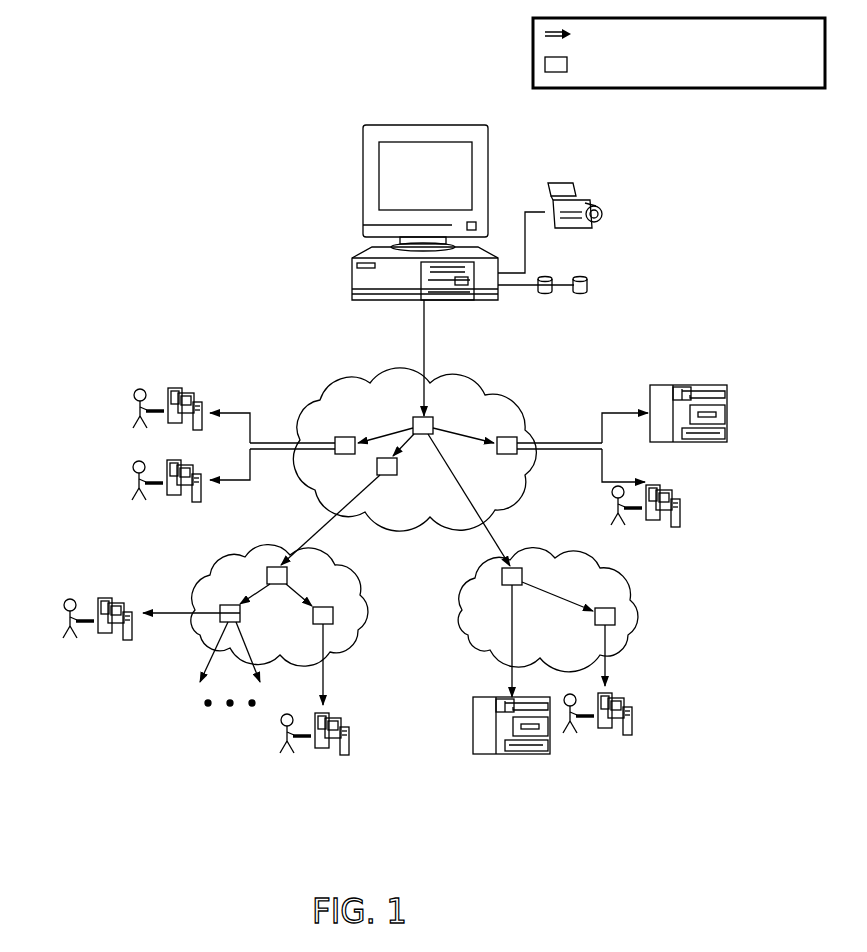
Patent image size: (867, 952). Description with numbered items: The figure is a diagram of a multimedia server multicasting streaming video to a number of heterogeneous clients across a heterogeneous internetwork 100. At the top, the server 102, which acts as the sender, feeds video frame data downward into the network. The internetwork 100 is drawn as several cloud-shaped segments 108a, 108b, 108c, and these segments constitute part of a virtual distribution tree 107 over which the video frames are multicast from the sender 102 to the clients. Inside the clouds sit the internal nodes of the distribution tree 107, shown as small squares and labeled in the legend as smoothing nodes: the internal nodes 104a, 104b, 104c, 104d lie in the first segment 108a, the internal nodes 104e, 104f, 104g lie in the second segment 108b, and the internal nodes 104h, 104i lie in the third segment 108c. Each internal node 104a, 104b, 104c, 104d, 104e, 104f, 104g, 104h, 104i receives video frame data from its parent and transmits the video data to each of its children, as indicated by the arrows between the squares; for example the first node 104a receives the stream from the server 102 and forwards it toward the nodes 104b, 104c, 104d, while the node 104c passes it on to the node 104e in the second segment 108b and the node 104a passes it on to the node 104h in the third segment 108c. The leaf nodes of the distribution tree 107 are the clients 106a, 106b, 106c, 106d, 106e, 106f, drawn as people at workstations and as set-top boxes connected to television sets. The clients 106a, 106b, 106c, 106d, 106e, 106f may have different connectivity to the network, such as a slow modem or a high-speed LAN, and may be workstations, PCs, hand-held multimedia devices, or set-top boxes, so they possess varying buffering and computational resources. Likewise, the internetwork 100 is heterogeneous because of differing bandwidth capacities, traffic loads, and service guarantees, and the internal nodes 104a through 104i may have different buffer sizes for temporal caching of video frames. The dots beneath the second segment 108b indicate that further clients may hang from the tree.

The heterogeneous internetwork 100 is at (212, 84).
The server 102 is at (427, 125).
The internal node 104a is at (433, 421).
The internal node 104b is at (343, 437).
The internal node 104c is at (378, 470).
The internal node 104d is at (514, 455).
The internal node 104e is at (270, 567).
The internal node 104f is at (220, 605).
The internal node 104g is at (334, 615).
The internal node 104h is at (517, 568).
The internal node 104i is at (616, 615).
The client 106a is at (172, 388).
The client 106b is at (185, 486).
The client 106c is at (101, 595).
The client 106d is at (346, 741).
The client 106e is at (634, 720).
The client 106f is at (683, 510).
The distribution tree 107 is at (378, 397).
The network segment 108a is at (452, 382).
The network segment 108b is at (335, 648).
The network segment 108c is at (600, 571).